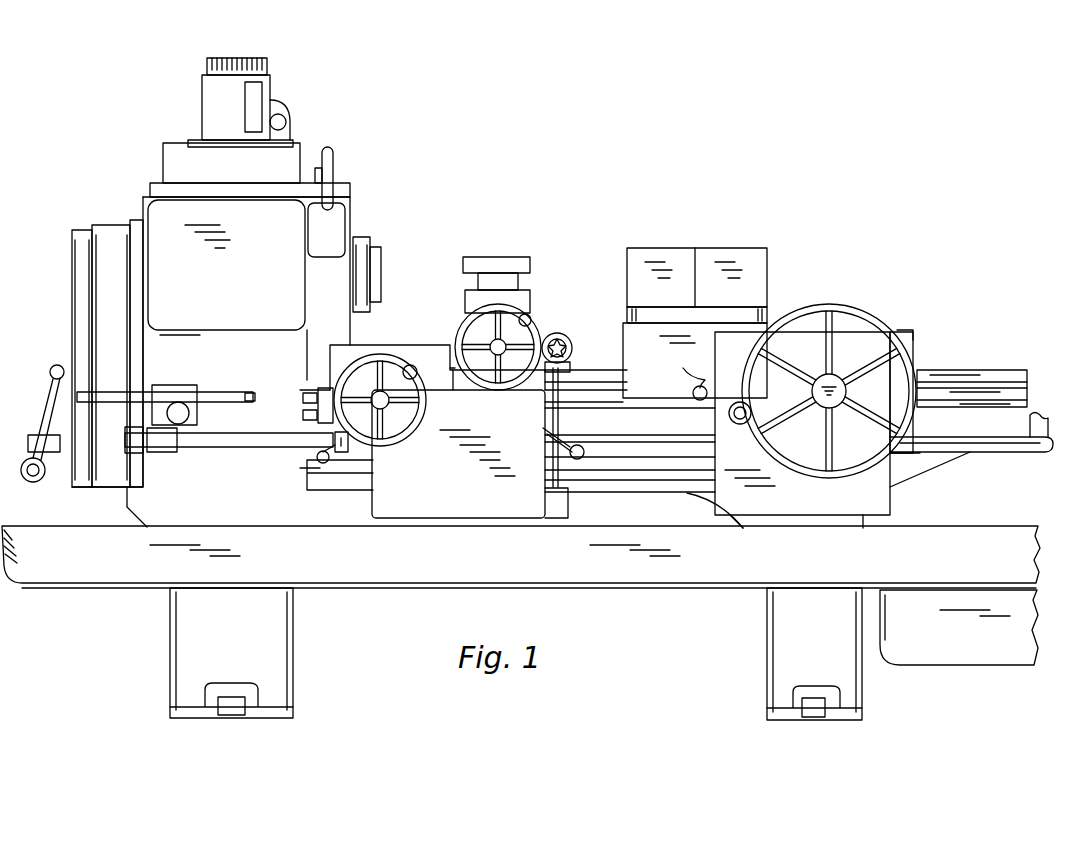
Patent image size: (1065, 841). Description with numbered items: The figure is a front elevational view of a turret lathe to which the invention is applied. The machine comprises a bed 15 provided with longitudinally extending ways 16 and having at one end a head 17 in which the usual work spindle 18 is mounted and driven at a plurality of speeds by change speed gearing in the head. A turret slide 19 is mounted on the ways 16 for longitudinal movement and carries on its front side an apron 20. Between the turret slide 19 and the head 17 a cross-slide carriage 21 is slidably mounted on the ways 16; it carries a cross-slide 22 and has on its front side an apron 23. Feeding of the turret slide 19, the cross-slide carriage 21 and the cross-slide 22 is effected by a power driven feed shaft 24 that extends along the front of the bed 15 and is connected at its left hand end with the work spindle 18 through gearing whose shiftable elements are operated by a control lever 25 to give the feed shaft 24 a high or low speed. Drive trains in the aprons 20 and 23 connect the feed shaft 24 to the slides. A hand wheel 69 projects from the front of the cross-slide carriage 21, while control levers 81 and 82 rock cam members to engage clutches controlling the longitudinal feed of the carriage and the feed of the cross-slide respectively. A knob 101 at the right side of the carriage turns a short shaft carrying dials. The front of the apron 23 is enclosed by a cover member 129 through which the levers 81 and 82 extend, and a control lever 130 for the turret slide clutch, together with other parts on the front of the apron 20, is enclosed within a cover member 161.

The bed 15 is at (937, 462).
The ways 16 is at (967, 373).
The head 17 is at (242, 290).
The work spindle 18 is at (378, 268).
The turret slide 19 is at (850, 338).
The apron 20 is at (892, 488).
The cross-slide carriage 21 is at (413, 348).
The cross-slide 22 is at (525, 303).
The apron 23 is at (373, 500).
The feed shaft 24 is at (247, 442).
The control lever 25 is at (52, 397).
The hand wheel 69 is at (375, 360).
The control lever 81 is at (310, 446).
The control lever 82 is at (573, 446).
The knob 101 is at (565, 340).
The cover member 129 is at (467, 510).
The control lever 130 is at (690, 368).
The cover member 161 is at (812, 502).